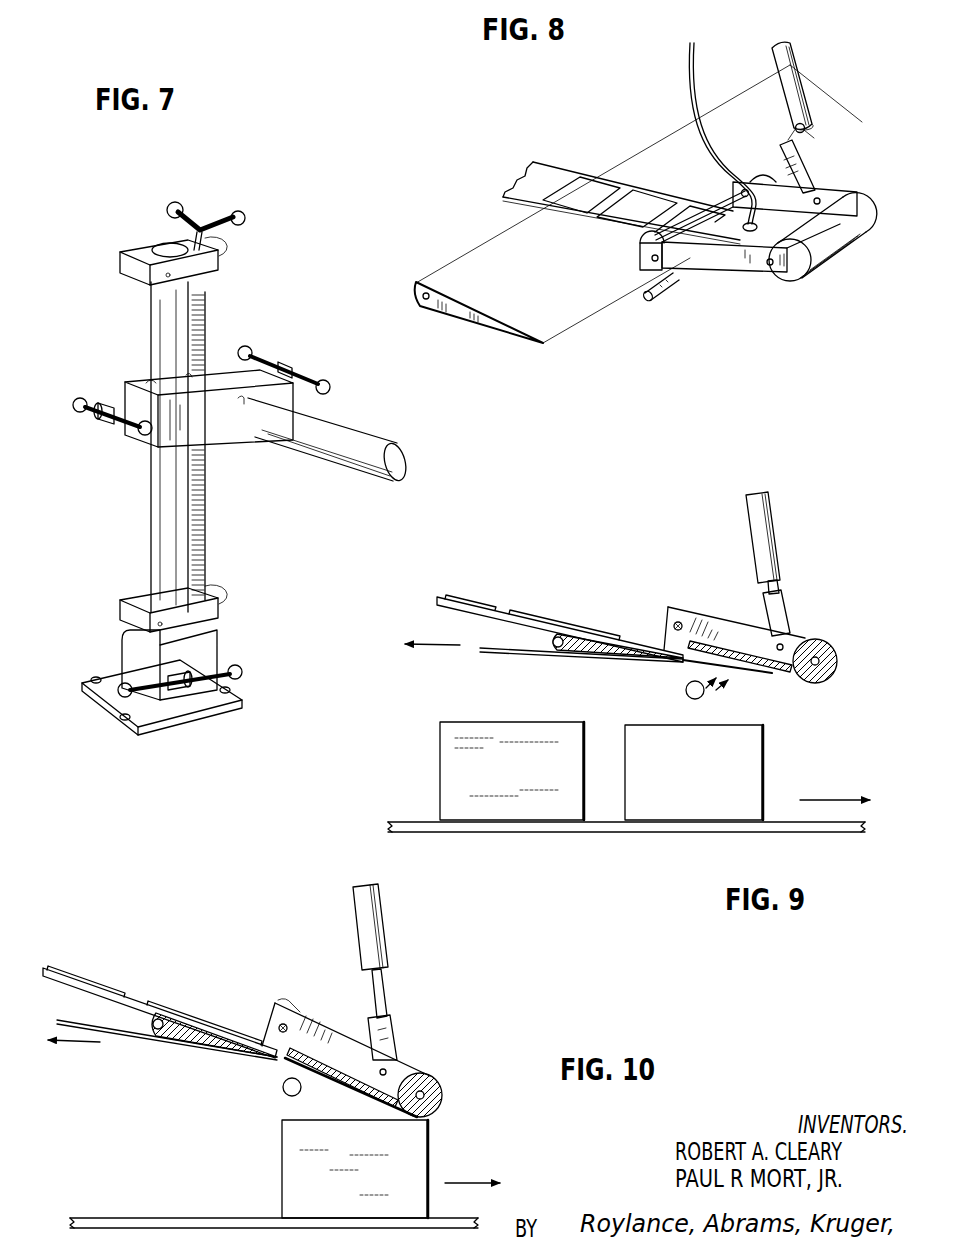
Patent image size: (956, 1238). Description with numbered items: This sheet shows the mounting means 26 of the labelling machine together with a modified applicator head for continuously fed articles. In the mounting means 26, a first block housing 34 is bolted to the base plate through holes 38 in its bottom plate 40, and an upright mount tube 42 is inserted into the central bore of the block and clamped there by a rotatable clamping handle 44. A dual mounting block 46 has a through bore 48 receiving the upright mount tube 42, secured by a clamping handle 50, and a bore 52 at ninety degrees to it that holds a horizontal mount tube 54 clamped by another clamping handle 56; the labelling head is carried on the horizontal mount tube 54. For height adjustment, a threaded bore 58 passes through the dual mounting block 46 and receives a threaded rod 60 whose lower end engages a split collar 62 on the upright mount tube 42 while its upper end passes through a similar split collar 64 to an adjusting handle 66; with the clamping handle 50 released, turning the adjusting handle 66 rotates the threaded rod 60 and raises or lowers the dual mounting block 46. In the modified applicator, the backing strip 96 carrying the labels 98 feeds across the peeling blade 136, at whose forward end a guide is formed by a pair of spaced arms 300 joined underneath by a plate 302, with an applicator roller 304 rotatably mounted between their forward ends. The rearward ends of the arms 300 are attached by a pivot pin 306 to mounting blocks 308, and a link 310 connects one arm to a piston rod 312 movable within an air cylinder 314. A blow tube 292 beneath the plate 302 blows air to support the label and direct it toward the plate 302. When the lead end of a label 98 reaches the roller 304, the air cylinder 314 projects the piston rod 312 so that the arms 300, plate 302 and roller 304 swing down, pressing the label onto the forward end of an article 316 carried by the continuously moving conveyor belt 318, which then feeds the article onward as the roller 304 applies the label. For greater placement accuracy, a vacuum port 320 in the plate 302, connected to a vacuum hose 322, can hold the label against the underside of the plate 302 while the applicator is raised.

In FIG. 7, the mounting means 26 is at (258, 547).
In FIG. 7, the first block housing 34 is at (117, 639).
In FIG. 7, the holes 38 is at (134, 717).
In FIG. 7, the bottom plate 40 is at (194, 715).
In FIG. 7, the upright mount tube 42 is at (158, 556).
In FIG. 7, the rotatable clamping handle 44 is at (220, 675).
In FIG. 7, the dual mounting block 46 is at (214, 434).
In FIG. 7, the through bore 48 is at (146, 386).
In FIG. 7, the clamping handle 50 is at (130, 433).
In FIG. 7, the bore 52 is at (238, 410).
In FIG. 7, the horizontal mount tube 54 is at (344, 458).
In FIG. 7, the clamping handle 56 is at (312, 380).
In FIG. 7, the threaded bore 58 is at (190, 378).
In FIG. 7, the threaded rod 60 is at (204, 541).
In FIG. 7, the split collar 62 is at (200, 609).
In FIG. 7, the split collar 64 is at (120, 279).
In FIG. 7, the adjusting handle 66 is at (194, 224).
In FIG. 8, the backing strip 96 is at (557, 170).
In FIG. 9, the backing strip 96 is at (506, 656).
In FIG. 10, the backing strip 96 is at (120, 1040).
In FIG. 8, the labels 98 is at (588, 182).
In FIG. 9, the labels 98 is at (544, 620).
In FIG. 10, the labels 98 is at (180, 1010).
In FIG. 8, the peeling blade 136 is at (578, 318).
In FIG. 9, the peeling blade 136 is at (574, 646).
In FIG. 10, the peeling blade 136 is at (220, 1040).
In FIG. 8, the blow tube 292 is at (655, 301).
In FIG. 9, the blow tube 292 is at (682, 691).
In FIG. 10, the blow tube 292 is at (278, 1083).
In FIG. 8, the arms 300 is at (746, 271).
In FIG. 9, the arms 300 is at (720, 644).
In FIG. 10, the arms 300 is at (408, 1070).
In FIG. 8, the plate 302 is at (724, 247).
In FIG. 9, the plate 302 is at (740, 656).
In FIG. 10, the plate 302 is at (342, 1077).
In FIG. 8, the applicator roller 304 is at (830, 244).
In FIG. 9, the applicator roller 304 is at (829, 652).
In FIG. 10, the applicator roller 304 is at (444, 1095).
In FIG. 8, the pivot pin 306 is at (728, 202).
In FIG. 9, the pivot pin 306 is at (674, 624).
In FIG. 10, the pivot pin 306 is at (274, 1026).
In FIG. 8, the mounting blocks 308 is at (642, 256).
In FIG. 10, the mounting blocks 308 is at (294, 1014).
In FIG. 8, the link 310 is at (826, 167).
In FIG. 9, the link 310 is at (788, 613).
In FIG. 10, the link 310 is at (396, 1041).
In FIG. 8, the piston rod 312 is at (812, 128).
In FIG. 9, the piston rod 312 is at (773, 587).
In FIG. 10, the piston rod 312 is at (386, 996).
In FIG. 8, the air cylinder 314 is at (806, 88).
In FIG. 9, the air cylinder 314 is at (772, 560).
In FIG. 10, the air cylinder 314 is at (386, 943).
In FIG. 9, the articles 316 is at (524, 781).
In FIG. 10, the articles 316 is at (298, 1157).
In FIG. 9, the conveyor belt 318 is at (562, 828).
In FIG. 10, the conveyor belt 318 is at (156, 1224).
In FIG. 8, the vacuum port 320 is at (754, 234).
In FIG. 8, the vacuum hose 322 is at (704, 78).